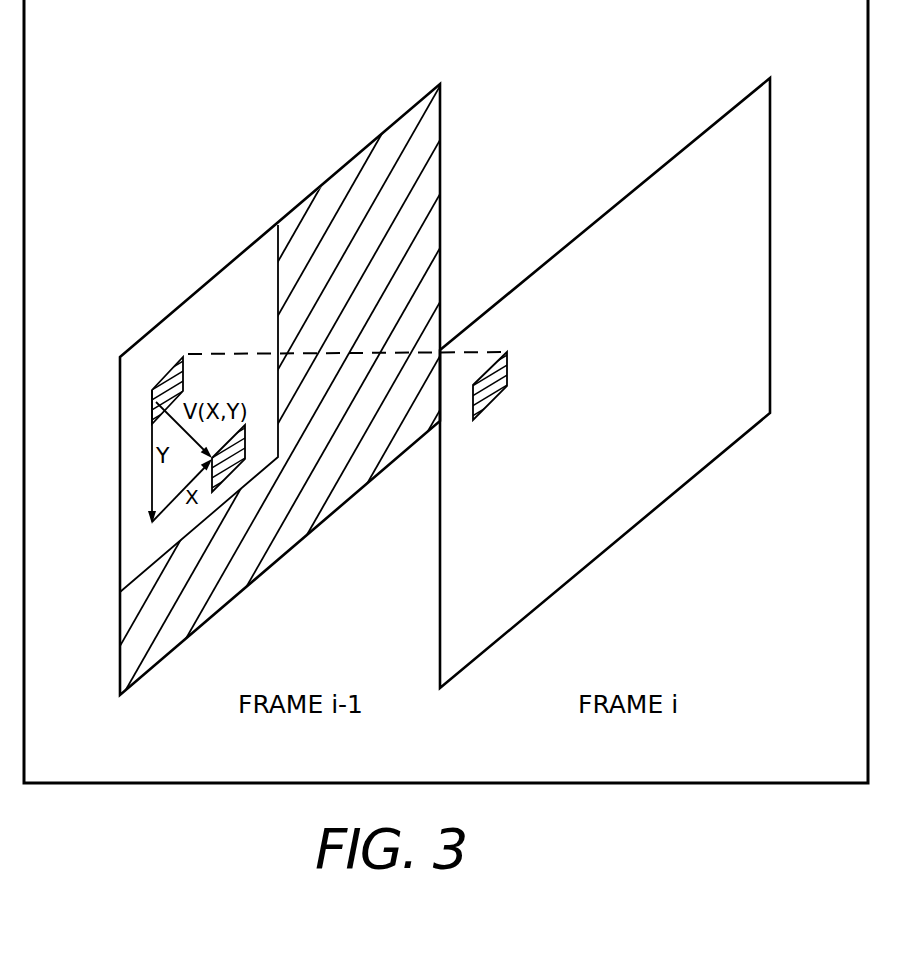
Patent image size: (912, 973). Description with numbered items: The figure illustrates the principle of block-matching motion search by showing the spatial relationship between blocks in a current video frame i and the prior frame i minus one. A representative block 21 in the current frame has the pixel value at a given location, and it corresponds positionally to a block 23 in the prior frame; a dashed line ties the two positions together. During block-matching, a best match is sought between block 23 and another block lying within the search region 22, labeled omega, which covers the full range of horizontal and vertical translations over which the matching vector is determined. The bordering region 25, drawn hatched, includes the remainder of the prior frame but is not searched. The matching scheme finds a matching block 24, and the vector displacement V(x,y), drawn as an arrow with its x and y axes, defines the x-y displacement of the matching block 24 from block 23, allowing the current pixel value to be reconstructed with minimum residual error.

The representative block 21 is at (505, 367).
The search region 22 is at (168, 345).
The block in prior frame 23 is at (152, 405).
The matching block 24 is at (247, 440).
The bordering region 25 is at (428, 132).